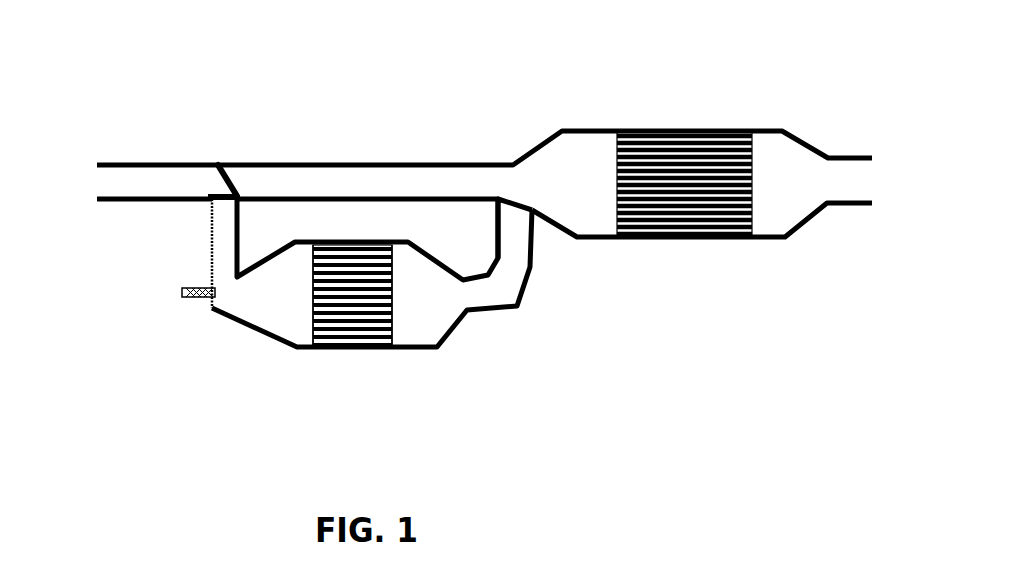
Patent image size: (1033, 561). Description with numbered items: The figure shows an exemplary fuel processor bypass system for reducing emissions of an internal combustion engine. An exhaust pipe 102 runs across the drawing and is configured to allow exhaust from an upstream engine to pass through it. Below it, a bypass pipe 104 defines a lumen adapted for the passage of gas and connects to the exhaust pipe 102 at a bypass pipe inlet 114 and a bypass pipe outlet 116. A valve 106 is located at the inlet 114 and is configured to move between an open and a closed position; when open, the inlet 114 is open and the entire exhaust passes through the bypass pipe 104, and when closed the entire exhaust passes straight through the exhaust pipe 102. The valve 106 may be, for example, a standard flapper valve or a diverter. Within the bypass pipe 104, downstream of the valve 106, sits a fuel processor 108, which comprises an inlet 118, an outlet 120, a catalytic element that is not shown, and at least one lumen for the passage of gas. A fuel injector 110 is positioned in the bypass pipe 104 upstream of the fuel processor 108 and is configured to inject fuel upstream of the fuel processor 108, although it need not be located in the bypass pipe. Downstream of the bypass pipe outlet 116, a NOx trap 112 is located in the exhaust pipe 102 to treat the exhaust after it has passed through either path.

The exhaust pipe 102 is at (352, 163).
The bypass pipe 104 is at (208, 243).
The valve 106 is at (218, 165).
The fuel processor 108 is at (348, 302).
The fuel injector 110 is at (193, 298).
The NOx trap 112 is at (667, 153).
The bypass pipe inlet 114 is at (210, 200).
The bypass pipe outlet 116 is at (513, 202).
The fuel processor inlet 118 is at (310, 310).
The fuel processor outlet 120 is at (393, 312).